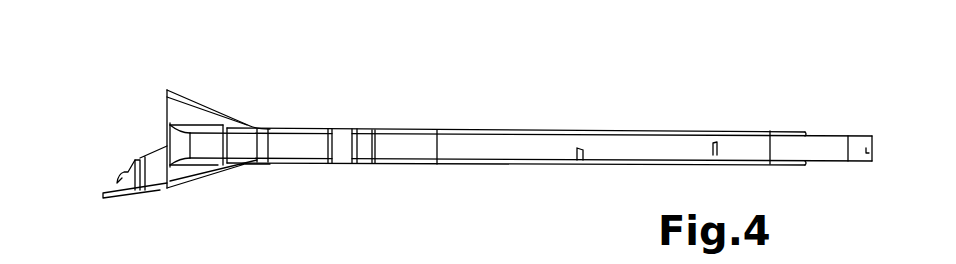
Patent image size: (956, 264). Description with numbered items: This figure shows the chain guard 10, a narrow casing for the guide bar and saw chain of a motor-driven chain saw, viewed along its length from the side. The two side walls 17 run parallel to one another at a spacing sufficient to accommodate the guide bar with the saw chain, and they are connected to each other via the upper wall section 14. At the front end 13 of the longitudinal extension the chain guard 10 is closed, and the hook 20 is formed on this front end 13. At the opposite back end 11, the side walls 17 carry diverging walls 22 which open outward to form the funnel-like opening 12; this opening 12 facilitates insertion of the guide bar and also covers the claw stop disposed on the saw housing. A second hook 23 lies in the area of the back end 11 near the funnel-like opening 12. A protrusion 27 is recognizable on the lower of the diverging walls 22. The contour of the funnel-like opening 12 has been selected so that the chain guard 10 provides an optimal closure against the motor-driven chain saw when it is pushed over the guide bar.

The chain guard 10 is at (578, 112).
The back end 11 is at (255, 122).
The funnel-like opening 12 is at (162, 115).
The front end 13 is at (787, 122).
The upper wall section 14 is at (568, 145).
The side walls 17 is at (473, 128).
The hook 20 is at (820, 148).
The diverging wall 22 is at (194, 104).
The hook 23 is at (238, 145).
The protrusion 27 is at (128, 172).